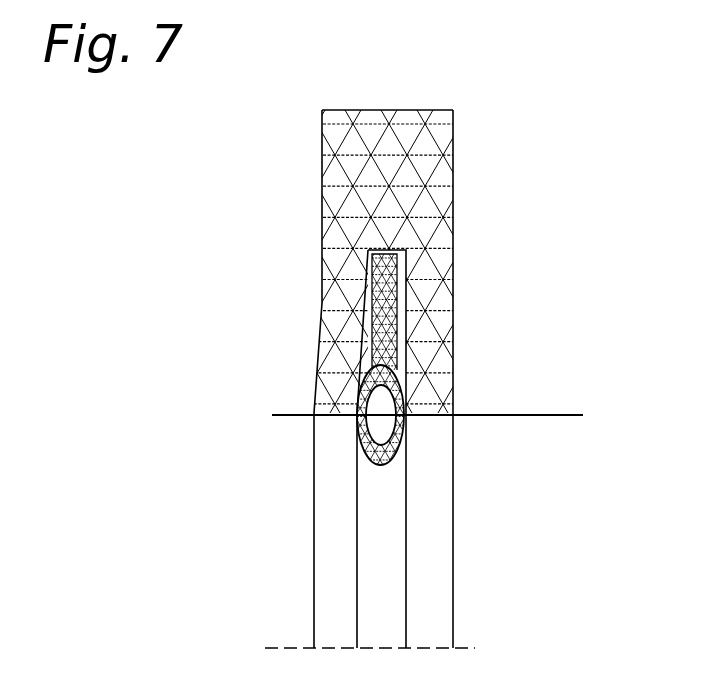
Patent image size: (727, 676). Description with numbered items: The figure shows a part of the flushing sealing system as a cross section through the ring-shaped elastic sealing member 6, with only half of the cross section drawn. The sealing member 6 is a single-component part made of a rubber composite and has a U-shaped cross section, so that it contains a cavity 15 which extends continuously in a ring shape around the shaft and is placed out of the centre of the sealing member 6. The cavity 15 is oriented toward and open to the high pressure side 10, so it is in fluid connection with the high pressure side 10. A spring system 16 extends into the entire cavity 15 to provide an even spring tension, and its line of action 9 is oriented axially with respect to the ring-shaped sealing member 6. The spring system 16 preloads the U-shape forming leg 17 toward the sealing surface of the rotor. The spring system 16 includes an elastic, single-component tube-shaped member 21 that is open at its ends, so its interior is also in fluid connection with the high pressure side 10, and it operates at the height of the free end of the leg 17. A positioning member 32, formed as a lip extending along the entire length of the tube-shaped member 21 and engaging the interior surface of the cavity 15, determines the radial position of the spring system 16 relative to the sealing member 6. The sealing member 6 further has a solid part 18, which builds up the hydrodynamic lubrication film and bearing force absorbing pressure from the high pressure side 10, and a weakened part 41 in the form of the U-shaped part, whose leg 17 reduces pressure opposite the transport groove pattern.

The elastic sealing member 6 is at (437, 183).
The solid part 18 is at (322, 189).
The leg 17 is at (335, 355).
The positioning member 32 is at (387, 298).
The cavity 15 is at (400, 344).
The weakened part 41 is at (464, 381).
The line of action 9 is at (553, 416).
The high pressure side 10 is at (548, 509).
The tube-shaped member 21 is at (366, 462).
The spring system 16 is at (391, 466).